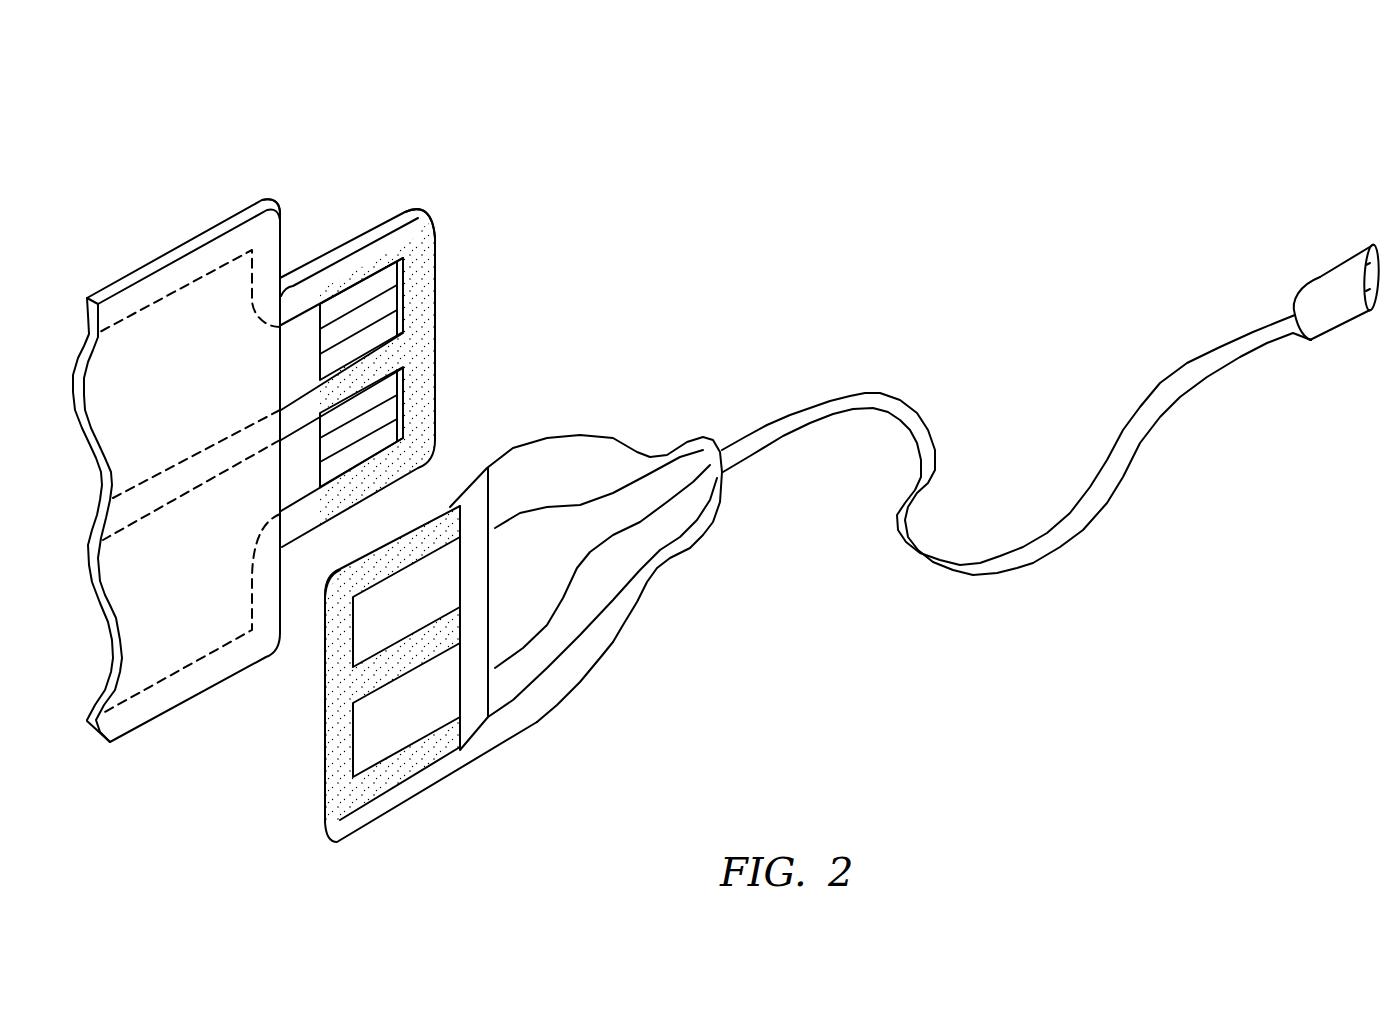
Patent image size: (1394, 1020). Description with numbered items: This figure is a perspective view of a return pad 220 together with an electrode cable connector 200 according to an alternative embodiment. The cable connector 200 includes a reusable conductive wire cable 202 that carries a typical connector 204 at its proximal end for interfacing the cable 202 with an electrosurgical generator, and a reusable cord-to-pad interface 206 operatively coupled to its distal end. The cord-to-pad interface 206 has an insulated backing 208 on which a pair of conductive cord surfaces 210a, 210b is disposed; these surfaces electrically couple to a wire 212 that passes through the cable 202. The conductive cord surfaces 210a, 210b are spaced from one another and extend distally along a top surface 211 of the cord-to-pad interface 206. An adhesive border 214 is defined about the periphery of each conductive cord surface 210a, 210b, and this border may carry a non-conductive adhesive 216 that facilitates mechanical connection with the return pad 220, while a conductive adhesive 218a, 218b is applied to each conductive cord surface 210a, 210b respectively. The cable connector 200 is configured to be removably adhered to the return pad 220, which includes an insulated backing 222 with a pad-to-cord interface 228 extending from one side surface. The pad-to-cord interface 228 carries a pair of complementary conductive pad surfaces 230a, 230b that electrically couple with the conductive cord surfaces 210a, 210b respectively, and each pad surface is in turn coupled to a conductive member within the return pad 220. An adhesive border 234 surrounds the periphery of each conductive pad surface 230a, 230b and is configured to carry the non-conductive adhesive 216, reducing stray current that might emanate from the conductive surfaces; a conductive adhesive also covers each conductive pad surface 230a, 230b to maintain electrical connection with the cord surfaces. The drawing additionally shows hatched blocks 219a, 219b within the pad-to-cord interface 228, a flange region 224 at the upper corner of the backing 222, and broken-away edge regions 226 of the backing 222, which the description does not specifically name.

The cable connector 200 is at (787, 547).
The conductive wire cable 202 is at (857, 403).
The connector 204 is at (1320, 290).
The cord-to-pad interface 206 is at (634, 424).
The insulated backing 208 is at (435, 778).
The conductive cord surface 210a is at (346, 654).
The conductive cord surface 210b is at (346, 748).
The top surface 211 is at (316, 566).
The wire 212 is at (555, 620).
The adhesive border 214 is at (448, 508).
The non-conductive adhesive 216 is at (439, 239).
The conductive adhesive 218a is at (403, 591).
The conductive adhesive 218b is at (370, 717).
The lower contact block 219a is at (403, 391).
The upper contact block 219b is at (372, 285).
The return pad 220 is at (296, 186).
The insulated backing 222 is at (197, 230).
The cover plate flange 224 is at (265, 237).
The cover plate edge 226 is at (152, 333).
The pad-to-cord interface 228 is at (404, 198).
The conductive pad surface 230a is at (395, 420).
The conductive pad surface 230b is at (400, 293).
The adhesive border 234 is at (437, 303).